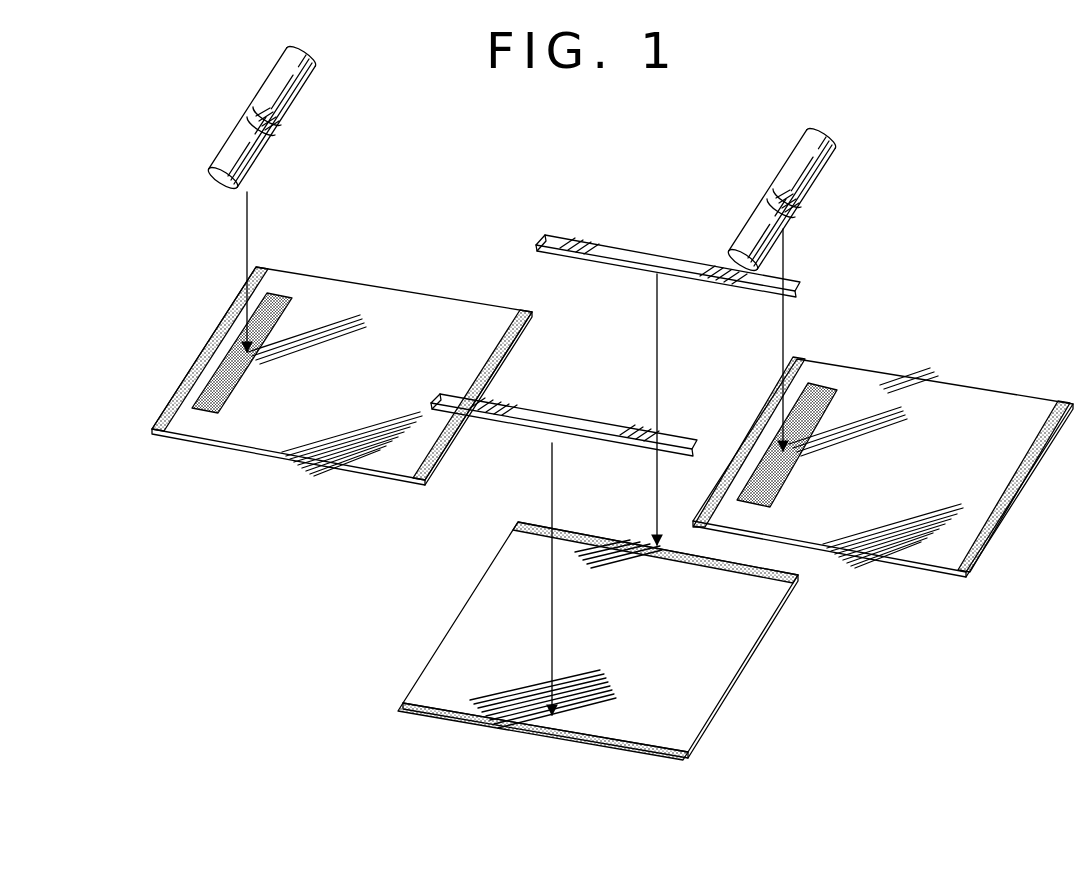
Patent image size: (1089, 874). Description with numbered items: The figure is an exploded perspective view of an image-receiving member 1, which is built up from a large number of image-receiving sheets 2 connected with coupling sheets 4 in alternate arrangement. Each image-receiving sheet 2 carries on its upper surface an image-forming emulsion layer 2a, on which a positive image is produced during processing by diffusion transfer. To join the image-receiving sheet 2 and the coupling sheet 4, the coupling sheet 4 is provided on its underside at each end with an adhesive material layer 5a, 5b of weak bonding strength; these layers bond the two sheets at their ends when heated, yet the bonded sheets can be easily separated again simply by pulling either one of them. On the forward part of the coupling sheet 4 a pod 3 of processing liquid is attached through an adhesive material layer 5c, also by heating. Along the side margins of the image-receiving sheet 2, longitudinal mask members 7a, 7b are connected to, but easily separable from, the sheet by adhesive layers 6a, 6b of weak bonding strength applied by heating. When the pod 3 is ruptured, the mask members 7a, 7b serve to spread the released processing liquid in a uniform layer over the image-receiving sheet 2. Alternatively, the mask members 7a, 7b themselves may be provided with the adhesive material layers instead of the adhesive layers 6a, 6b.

The image-receiving member 1 is at (458, 253).
The image-receiving sheet 2 is at (742, 682).
The image-forming emulsion layer 2a is at (466, 630).
The pod of processing liquid 3 is at (232, 146).
The coupling sheet 4 is at (293, 462).
The adhesive material layer 5a is at (508, 359).
The adhesive material layer 5b is at (213, 342).
The adhesive material layer 5c is at (240, 371).
The adhesive layer 6a is at (641, 732).
The adhesive layer 6b is at (586, 531).
The mask member 7a is at (532, 421).
The mask member 7b is at (627, 258).